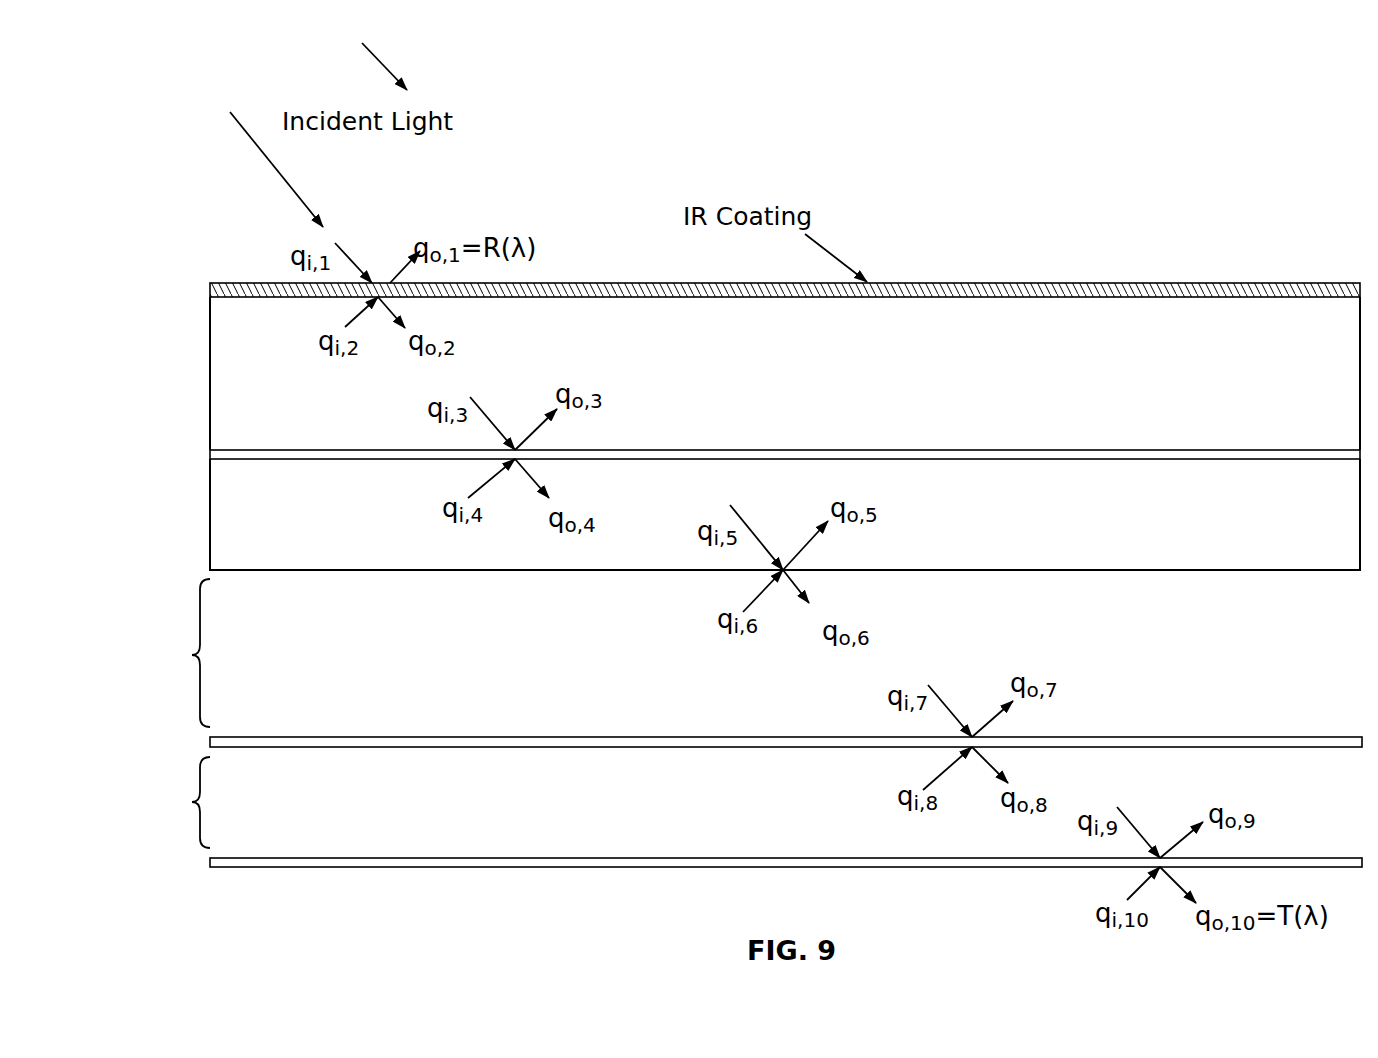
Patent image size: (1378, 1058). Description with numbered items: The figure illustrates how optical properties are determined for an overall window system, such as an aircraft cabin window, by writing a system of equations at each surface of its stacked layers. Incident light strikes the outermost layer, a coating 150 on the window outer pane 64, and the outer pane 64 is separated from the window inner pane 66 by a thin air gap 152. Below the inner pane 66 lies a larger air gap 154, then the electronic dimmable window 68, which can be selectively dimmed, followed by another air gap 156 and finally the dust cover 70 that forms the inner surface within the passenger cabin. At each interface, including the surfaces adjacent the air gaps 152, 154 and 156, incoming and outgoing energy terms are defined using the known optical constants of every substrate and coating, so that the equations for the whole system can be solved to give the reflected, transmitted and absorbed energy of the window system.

The IR coating 150 is at (210, 283).
The window outer pane 64 is at (210, 373).
The air gap 152 is at (210, 455).
The window inner pane 66 is at (210, 513).
The air gap 154 is at (192, 655).
The electronic dimmable window 68 is at (210, 742).
The air gap 156 is at (192, 802).
The dust cover 70 is at (310, 867).